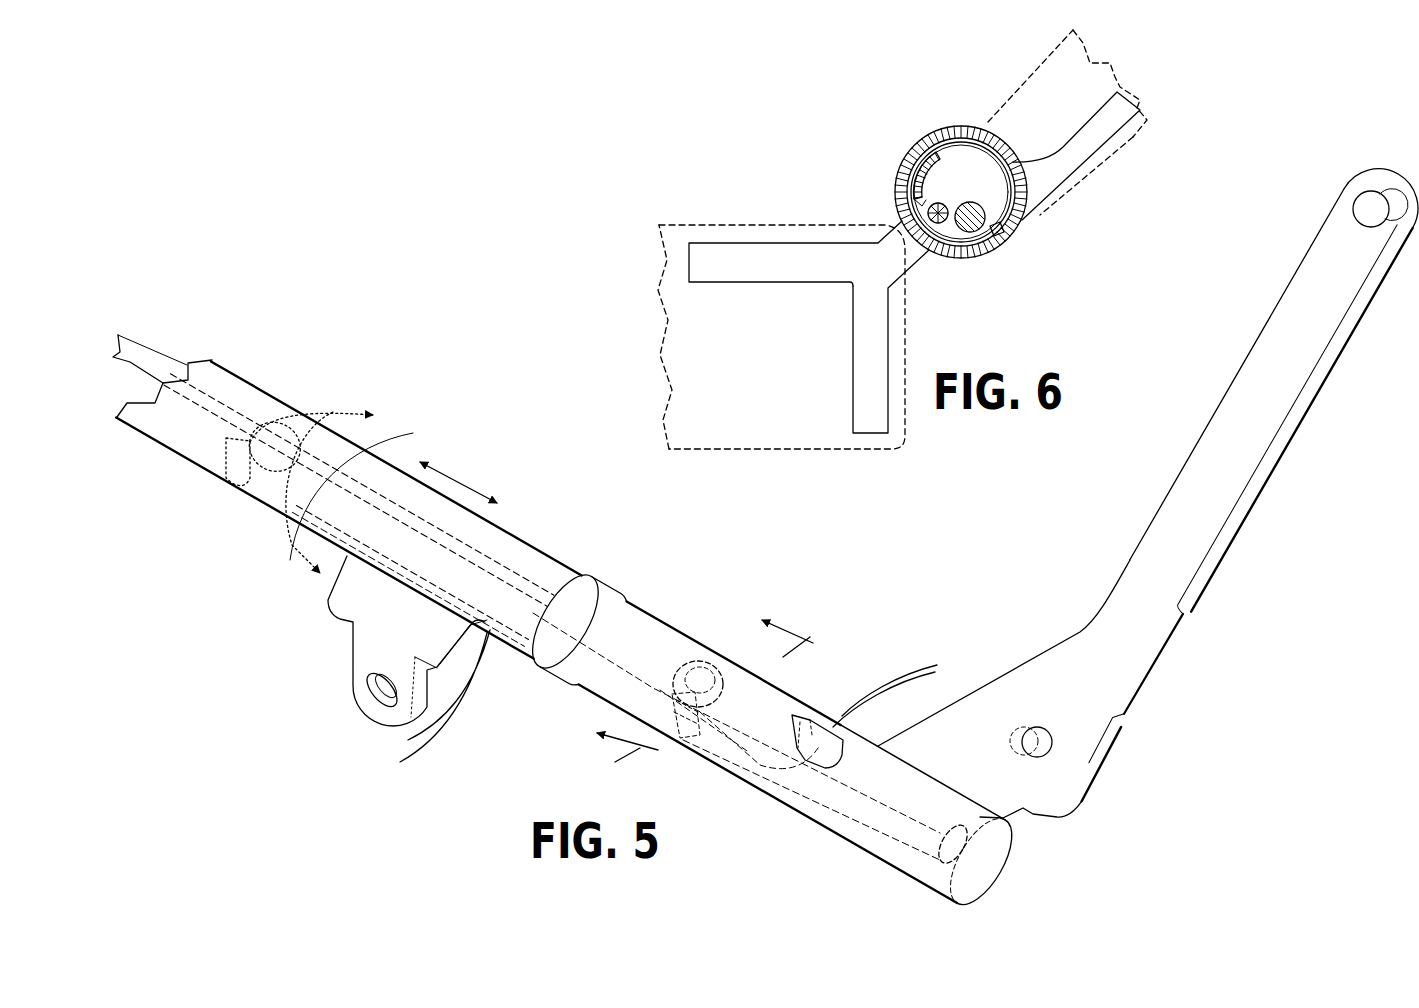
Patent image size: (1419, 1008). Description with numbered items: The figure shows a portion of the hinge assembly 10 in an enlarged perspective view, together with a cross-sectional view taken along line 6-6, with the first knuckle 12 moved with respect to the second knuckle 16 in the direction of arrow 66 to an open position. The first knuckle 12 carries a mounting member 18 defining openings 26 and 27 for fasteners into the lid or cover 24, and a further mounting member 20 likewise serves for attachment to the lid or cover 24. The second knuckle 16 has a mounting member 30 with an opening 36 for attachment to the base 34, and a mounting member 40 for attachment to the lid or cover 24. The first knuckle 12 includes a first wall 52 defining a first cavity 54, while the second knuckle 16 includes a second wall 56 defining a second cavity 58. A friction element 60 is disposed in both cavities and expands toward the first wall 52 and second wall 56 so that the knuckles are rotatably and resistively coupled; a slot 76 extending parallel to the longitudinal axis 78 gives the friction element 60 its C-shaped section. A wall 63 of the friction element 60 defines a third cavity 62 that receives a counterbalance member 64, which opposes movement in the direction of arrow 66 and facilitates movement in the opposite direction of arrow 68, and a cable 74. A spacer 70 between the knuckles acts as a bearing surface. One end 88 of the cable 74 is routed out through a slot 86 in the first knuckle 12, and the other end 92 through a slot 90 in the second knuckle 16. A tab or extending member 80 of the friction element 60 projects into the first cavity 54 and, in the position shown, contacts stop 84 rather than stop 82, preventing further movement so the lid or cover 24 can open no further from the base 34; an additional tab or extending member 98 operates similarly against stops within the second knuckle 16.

In FIG. 5, the line 6- 6 is at (713, 702).
In FIG. 5, the hinge assembly 10 is at (730, 547).
In FIG. 6, the hinge assembly 10 is at (836, 137).
In FIG. 5, the first knuckle 12 is at (842, 845).
In FIG. 5, the second knuckle 16 is at (510, 530).
In FIG. 5, the mounting member 18 is at (1320, 388).
In FIG. 6, the mounting member 20 is at (1078, 150).
In FIG. 6, the lid or cover 24 is at (1148, 145).
In FIG. 5, the opening 26 is at (1019, 740).
In FIG. 5, the opening 27 is at (1366, 192).
In FIG. 5, the mounting member 30 is at (356, 652).
In FIG. 6, the mounting member 30 is at (860, 395).
In FIG. 6, the base 34 is at (773, 223).
In FIG. 5, the opening 36 is at (380, 699).
In FIG. 6, the mounting member 40 is at (758, 272).
In FIG. 5, the first wall 52 is at (862, 853).
In FIG. 6, the first wall 52 is at (982, 142).
In FIG. 5, the first cavity 54 is at (982, 849).
In FIG. 6, the first cavity 54 is at (994, 184).
In FIG. 5, the second wall 56 is at (285, 402).
In FIG. 5, the second cavity 58 is at (200, 445).
In FIG. 5, the friction element 60 is at (618, 596).
In FIG. 5, the third cavity 62 is at (730, 683).
In FIG. 5, the wall 63 is at (717, 664).
In FIG. 5, the counterbalance member 64 is at (832, 800).
In FIG. 6, the counterbalance member 64 is at (990, 212).
In FIG. 5, the arrow 66 is at (340, 416).
In FIG. 5, the arrow 68 is at (410, 433).
In FIG. 5, the spacer 70 is at (560, 576).
In FIG. 5, the cable 74 is at (731, 762).
In FIG. 6, the cable 74 is at (939, 225).
In FIG. 5, the slot 76 is at (578, 633).
In FIG. 5, the longitudinal axis 78 is at (465, 485).
In FIG. 5, the tab or extending member 80 is at (680, 747).
In FIG. 6, the tab or extending member 80 is at (957, 128).
In FIG. 6, the stop 82 is at (1000, 237).
In FIG. 6, the stop 84 is at (908, 197).
In FIG. 5, the slot 86 is at (806, 712).
In FIG. 5, the end 88 is at (893, 675).
In FIG. 5, the slot 90 is at (466, 627).
In FIG. 5, the end 92 is at (454, 723).
In FIG. 5, the tab or extending member 98 is at (227, 482).